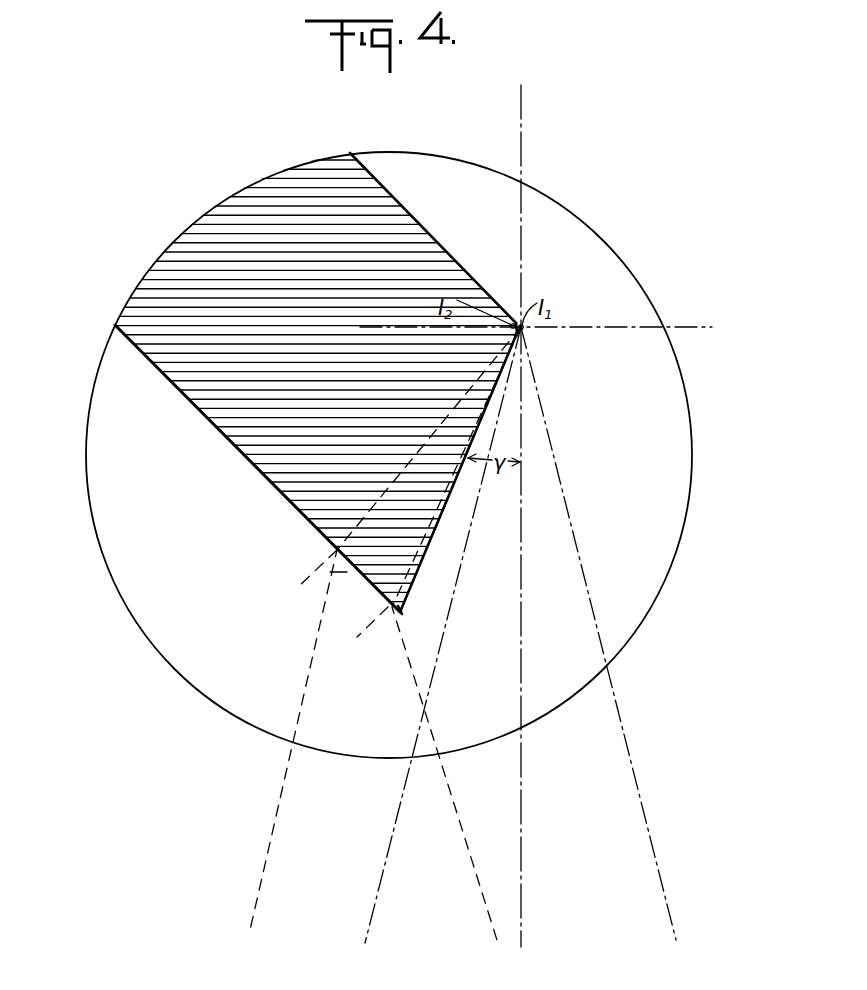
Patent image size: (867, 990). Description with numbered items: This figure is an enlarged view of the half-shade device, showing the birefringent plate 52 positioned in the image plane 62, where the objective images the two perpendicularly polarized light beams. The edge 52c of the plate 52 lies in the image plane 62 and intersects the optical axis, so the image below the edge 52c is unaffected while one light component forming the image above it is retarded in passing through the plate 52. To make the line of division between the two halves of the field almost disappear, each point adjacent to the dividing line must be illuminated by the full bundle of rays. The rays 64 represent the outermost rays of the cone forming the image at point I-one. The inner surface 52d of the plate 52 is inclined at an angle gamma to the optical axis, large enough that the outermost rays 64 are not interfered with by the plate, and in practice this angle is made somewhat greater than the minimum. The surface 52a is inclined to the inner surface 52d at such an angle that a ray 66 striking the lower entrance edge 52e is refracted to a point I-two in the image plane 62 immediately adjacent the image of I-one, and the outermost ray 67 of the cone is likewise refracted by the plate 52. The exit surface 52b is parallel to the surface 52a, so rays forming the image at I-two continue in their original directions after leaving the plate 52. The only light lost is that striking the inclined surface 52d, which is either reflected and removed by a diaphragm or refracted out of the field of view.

The birefringent plate 52 is at (315, 402).
The surface 52a is at (218, 432).
The exit surface 52b is at (417, 222).
The edge 52c is at (508, 322).
The inner surface 52d is at (443, 523).
The lower entrance edge 52e is at (404, 614).
The image plane 62 is at (677, 326).
The rays 64 is at (454, 597).
The ray 66 is at (422, 695).
The outermost ray 67 is at (313, 648).